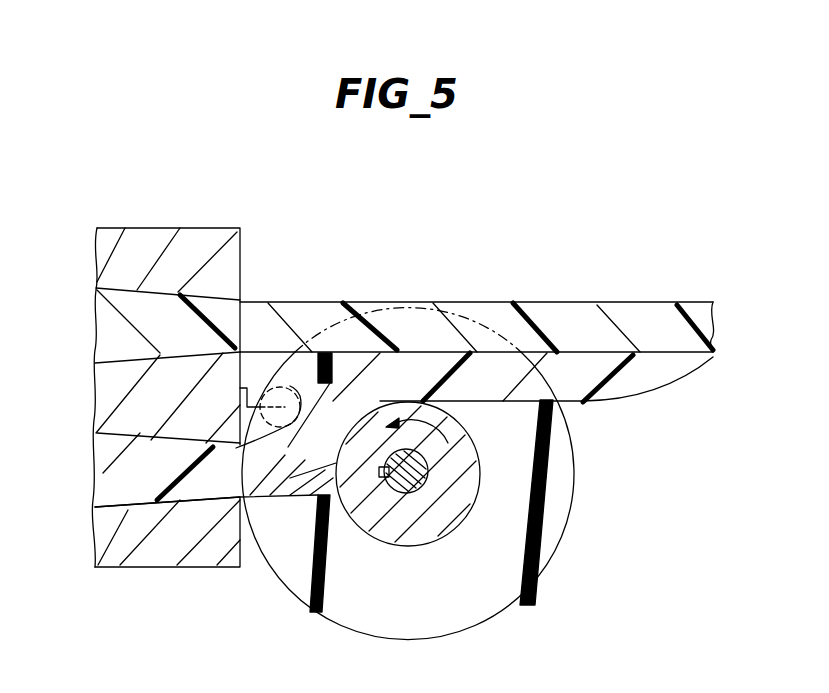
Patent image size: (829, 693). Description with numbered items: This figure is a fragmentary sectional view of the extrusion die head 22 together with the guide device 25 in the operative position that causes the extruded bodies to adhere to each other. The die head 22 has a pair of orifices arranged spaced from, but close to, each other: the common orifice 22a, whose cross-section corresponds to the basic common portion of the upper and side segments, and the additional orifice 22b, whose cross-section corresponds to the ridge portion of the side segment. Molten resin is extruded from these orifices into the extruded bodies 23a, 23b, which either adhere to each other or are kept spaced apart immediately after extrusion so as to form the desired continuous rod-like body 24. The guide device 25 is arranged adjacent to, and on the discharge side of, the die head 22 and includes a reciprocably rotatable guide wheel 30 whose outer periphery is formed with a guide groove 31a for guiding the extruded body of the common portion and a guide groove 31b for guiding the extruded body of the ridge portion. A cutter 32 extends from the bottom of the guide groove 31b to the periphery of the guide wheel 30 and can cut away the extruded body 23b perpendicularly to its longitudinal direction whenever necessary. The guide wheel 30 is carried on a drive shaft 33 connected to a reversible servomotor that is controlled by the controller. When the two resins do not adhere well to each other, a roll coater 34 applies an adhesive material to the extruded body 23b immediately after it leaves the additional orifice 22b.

The die head 22 is at (182, 224).
The common orifice 22a is at (133, 292).
The additional orifice 22b is at (100, 567).
The extruded body 23a is at (324, 300).
The extruded body 23b is at (300, 470).
The continuous rod-like body 24 is at (642, 305).
The guide device 25 is at (577, 477).
The guide wheel 30 is at (567, 533).
The guide groove 31a is at (543, 573).
The guide groove 31b is at (457, 548).
The cutter 32 is at (297, 472).
The drive shaft 33 is at (440, 465).
The roll coater 34 is at (284, 386).